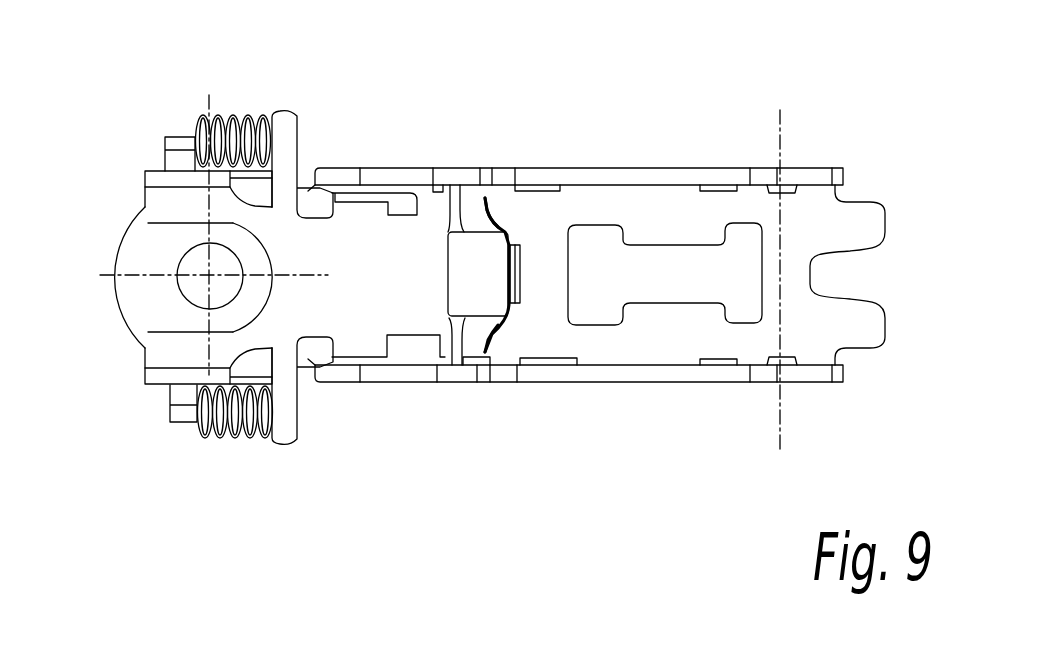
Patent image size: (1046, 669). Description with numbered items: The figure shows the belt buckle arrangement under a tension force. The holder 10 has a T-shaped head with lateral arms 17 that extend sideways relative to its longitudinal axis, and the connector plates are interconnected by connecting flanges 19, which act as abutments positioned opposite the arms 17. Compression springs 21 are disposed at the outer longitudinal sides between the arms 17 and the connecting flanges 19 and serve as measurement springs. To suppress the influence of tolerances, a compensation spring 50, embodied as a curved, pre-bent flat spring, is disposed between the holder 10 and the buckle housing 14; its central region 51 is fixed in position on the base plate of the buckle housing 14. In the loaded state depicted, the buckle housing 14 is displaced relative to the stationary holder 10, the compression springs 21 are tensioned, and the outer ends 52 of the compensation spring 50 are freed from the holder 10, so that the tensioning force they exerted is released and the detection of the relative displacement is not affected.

The holder 10 is at (175, 209).
The buckle housing 14 is at (547, 215).
The arms 17 is at (282, 133).
The connecting flanges 19 is at (173, 143).
The compression springs 21 is at (213, 117).
The compensation spring 50 is at (524, 318).
The central region 51 is at (523, 257).
The outer ends 52 is at (497, 207).